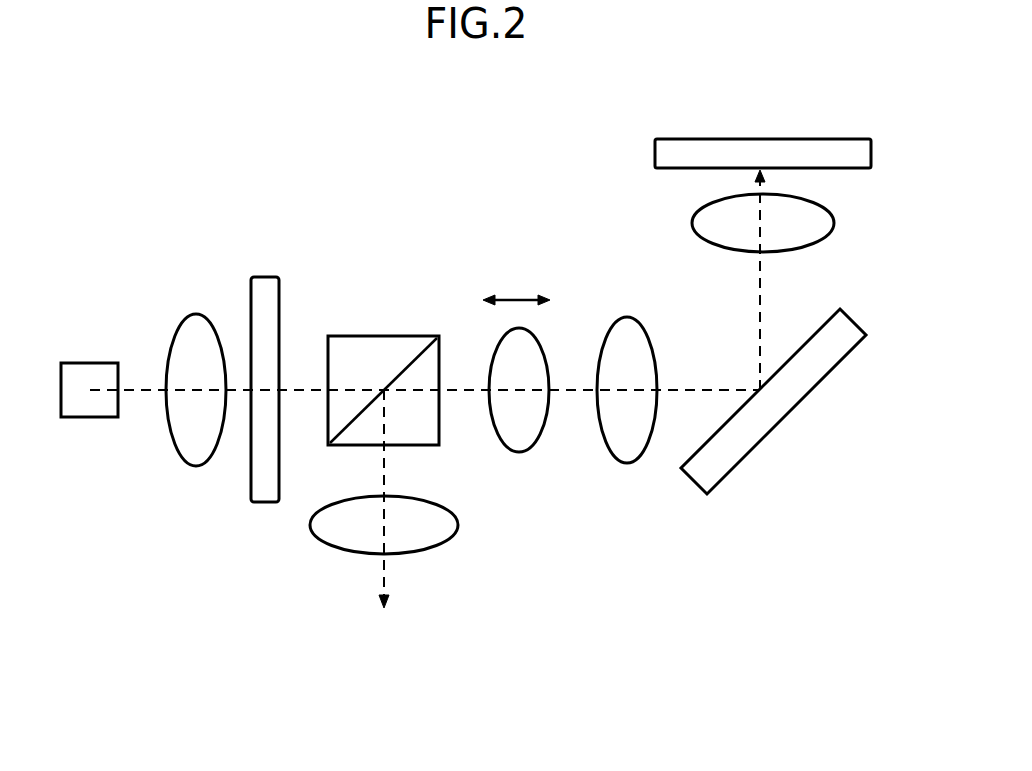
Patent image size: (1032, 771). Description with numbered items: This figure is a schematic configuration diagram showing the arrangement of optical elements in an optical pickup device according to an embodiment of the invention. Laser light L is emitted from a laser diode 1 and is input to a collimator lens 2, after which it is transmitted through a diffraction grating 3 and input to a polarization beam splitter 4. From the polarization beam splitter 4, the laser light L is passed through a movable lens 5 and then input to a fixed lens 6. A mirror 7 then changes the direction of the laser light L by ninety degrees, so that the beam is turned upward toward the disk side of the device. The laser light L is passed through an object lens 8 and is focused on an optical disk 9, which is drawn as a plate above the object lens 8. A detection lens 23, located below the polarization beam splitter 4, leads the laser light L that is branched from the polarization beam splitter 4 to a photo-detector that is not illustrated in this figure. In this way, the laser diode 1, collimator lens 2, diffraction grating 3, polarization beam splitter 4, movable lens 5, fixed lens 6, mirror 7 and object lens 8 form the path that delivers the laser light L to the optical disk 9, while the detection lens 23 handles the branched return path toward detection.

The laser diode 1 is at (93, 362).
The collimator lens 2 is at (197, 314).
The diffraction grating 3 is at (268, 276).
The polarization beam splitter 4 is at (362, 334).
The movable lens 5 is at (521, 454).
The fixed lens 6 is at (629, 465).
The mirror 7 is at (747, 461).
The object lens 8 is at (692, 227).
The optical disk 9 is at (690, 139).
The detection lens 23 is at (332, 548).
The laser light L is at (139, 394).